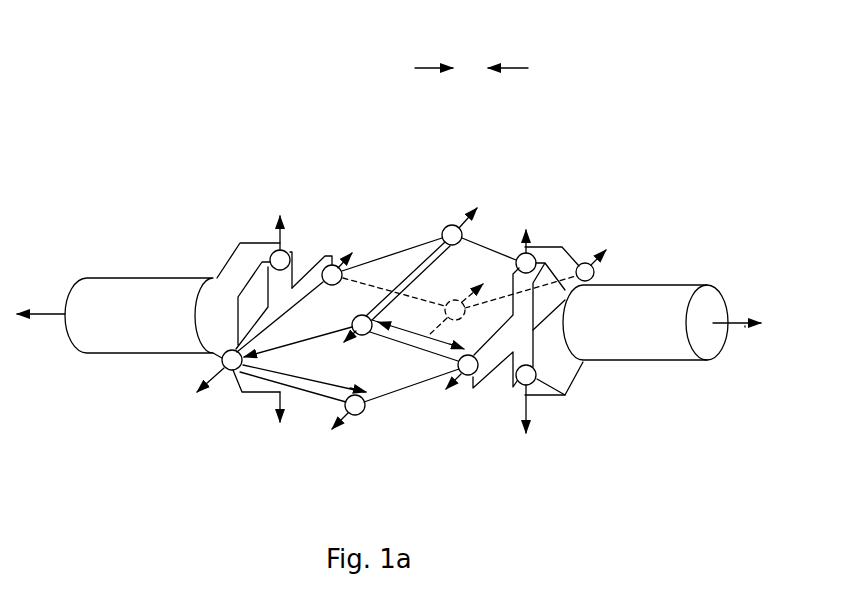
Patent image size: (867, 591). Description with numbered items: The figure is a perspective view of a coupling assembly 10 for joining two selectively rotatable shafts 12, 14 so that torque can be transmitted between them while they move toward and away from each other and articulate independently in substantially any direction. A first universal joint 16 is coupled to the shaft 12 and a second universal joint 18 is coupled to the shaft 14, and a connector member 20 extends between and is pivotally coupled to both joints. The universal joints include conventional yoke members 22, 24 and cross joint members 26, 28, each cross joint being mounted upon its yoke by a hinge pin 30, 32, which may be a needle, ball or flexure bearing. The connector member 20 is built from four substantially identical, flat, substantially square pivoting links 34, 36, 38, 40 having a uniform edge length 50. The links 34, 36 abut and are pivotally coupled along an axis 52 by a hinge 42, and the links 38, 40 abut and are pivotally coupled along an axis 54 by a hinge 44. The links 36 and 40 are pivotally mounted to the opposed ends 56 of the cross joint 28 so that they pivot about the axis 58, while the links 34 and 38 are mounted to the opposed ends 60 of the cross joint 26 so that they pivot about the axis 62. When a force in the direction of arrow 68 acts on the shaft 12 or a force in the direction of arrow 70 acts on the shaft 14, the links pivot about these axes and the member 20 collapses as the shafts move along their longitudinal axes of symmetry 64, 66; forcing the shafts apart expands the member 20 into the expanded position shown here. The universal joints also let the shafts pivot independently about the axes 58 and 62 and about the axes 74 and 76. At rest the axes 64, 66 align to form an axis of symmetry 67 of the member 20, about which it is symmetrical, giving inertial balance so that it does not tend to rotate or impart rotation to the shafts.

The assembly 10 is at (135, 161).
The shaft 12 is at (125, 278).
The shaft 14 is at (670, 284).
The first universal joint 16 is at (235, 245).
The second universal joint 18 is at (567, 242).
The connector member 20 is at (401, 246).
The yoke member 22 is at (247, 390).
The yoke member 24 is at (578, 368).
The cross joint member 26 is at (300, 266).
The cross joint member 28 is at (503, 260).
The hinge pin 30 is at (277, 242).
The hinge pin 32 is at (556, 256).
The pivoting link 34 is at (372, 268).
The pivoting link 36 is at (462, 290).
The pivoting link 38 is at (366, 372).
The pivoting link 40 is at (405, 392).
The hinge 42 is at (450, 224).
The hinge 44 is at (369, 411).
The edge length 50 is at (403, 325).
The axis 52 is at (460, 224).
The axis 54 is at (353, 417).
The opposed ends 56 is at (593, 278).
The axis 58 is at (590, 245).
The opposed ends 60 is at (322, 268).
The axis 62 is at (203, 378).
The longitudinal axis of symmetry 64 is at (54, 312).
The longitudinal axis of symmetry 66 is at (742, 322).
The axis of symmetry 67 is at (745, 327).
The arrow 68 is at (436, 67).
The arrow 70 is at (515, 67).
The axis 74 is at (528, 410).
The axis 76 is at (268, 407).